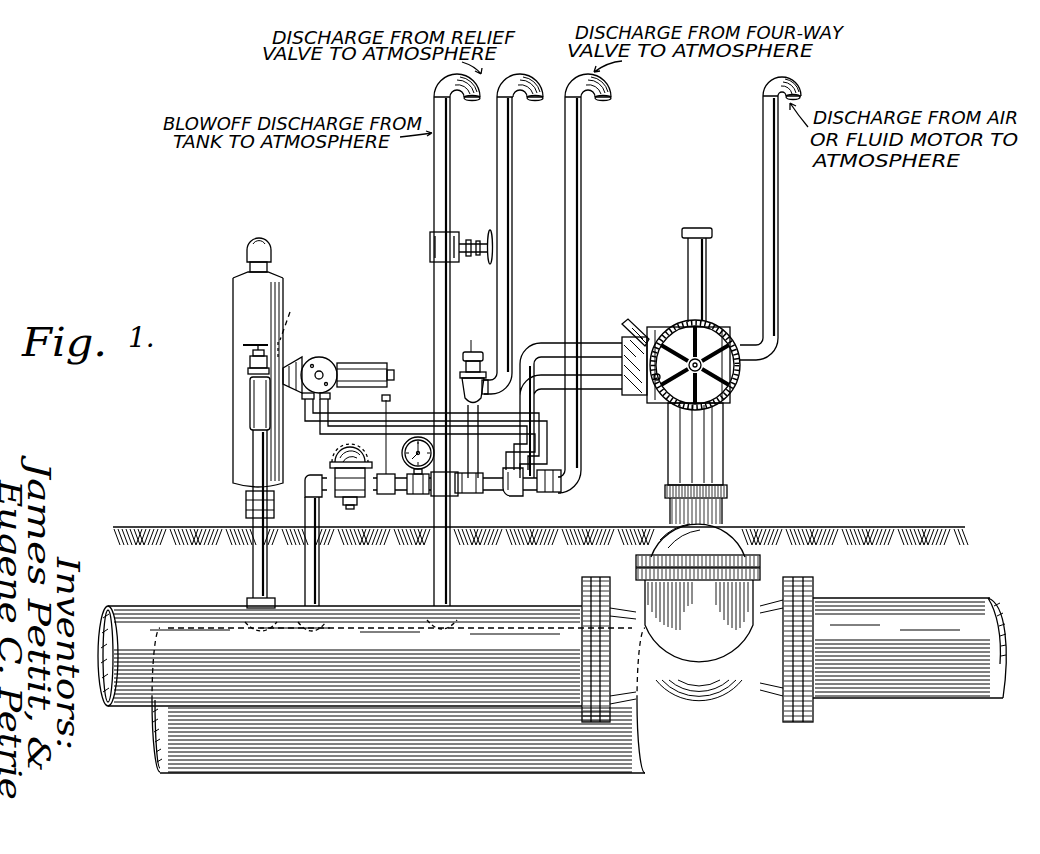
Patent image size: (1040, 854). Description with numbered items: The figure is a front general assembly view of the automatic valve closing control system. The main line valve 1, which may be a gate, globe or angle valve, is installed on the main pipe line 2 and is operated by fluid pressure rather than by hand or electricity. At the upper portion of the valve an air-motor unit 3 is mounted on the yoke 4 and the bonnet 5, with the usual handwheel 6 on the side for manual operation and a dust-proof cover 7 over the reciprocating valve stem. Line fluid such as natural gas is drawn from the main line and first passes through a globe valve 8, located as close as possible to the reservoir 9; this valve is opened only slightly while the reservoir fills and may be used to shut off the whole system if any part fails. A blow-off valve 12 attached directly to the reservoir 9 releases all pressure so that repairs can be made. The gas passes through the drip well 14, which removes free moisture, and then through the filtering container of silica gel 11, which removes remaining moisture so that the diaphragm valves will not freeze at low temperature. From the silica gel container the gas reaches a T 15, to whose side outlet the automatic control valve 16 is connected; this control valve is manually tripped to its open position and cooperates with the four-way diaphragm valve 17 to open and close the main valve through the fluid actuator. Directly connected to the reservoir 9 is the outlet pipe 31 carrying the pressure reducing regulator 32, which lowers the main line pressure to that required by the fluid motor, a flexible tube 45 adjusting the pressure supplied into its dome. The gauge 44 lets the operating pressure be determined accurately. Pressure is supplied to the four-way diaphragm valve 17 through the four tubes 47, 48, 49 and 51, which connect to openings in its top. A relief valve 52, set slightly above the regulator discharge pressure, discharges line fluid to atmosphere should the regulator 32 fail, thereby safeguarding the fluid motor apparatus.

The main line valve 1 is at (703, 688).
The main pipe line 2 is at (141, 606).
The air-motor unit 3 is at (653, 325).
The yoke 4 is at (668, 449).
The bonnet 5 is at (668, 530).
The handwheel 6 is at (741, 377).
The dust-proof cover 7 is at (707, 283).
The globe valve 8 is at (250, 370).
The reservoir 9 is at (645, 752).
The filtering container of silica gel 11 is at (233, 304).
The blow-off valve 12 is at (430, 249).
The drip well 14 is at (250, 418).
The T 15 is at (296, 325).
The automatic control valve 16 is at (286, 366).
The four-way diaphragm valve 17 is at (551, 492).
The outlet pipe 31 is at (319, 580).
The pressure reducing regulator 32 is at (357, 493).
The gauge 44 is at (418, 436).
The flexible tube 45 is at (330, 466).
The tube 47 is at (471, 493).
The tube 48 is at (546, 432).
The tube 49 is at (512, 496).
The tube 51 is at (537, 448).
The relief valve 52 is at (471, 345).